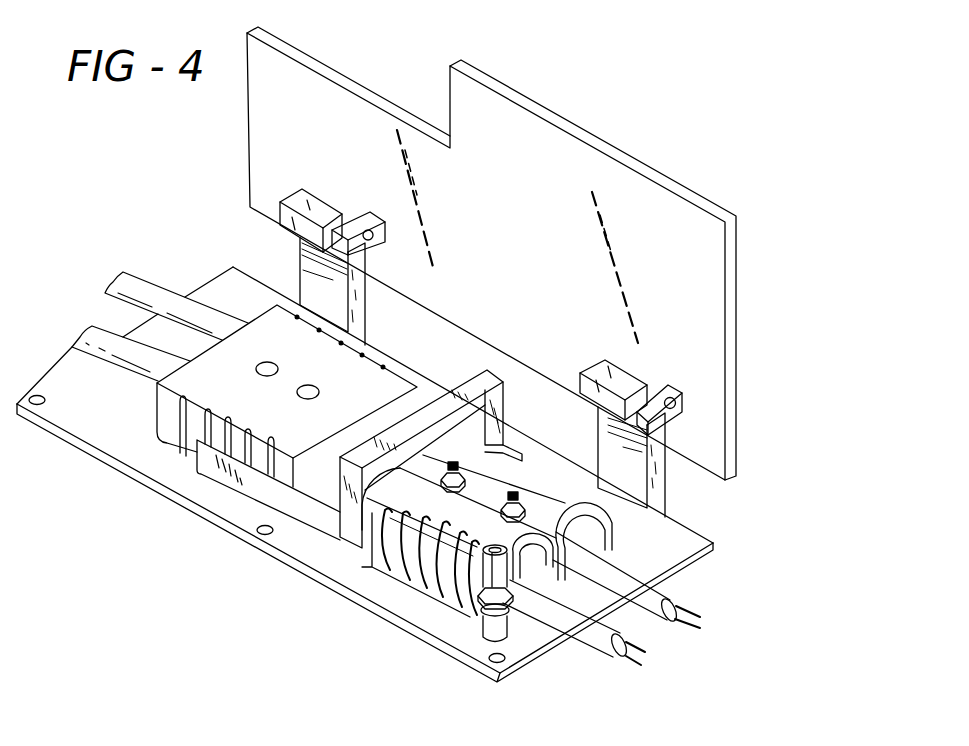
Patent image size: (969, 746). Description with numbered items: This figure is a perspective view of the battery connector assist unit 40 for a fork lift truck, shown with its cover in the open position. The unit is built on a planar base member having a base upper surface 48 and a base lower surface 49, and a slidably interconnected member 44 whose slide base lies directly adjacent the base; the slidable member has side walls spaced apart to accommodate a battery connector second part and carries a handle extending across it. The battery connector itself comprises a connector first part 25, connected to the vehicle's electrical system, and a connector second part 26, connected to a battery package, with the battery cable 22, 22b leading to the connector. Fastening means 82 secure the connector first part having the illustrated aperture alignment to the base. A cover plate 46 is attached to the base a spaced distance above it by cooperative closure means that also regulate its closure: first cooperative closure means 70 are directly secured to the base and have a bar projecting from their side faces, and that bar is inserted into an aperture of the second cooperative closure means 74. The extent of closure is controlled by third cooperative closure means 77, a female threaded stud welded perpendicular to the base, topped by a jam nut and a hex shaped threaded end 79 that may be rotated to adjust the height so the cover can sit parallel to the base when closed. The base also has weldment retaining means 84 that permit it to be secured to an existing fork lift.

The battery cable 22 is at (122, 272).
The battery cable 22b is at (653, 646).
The connector first part 25 is at (565, 503).
The connector second part 26 is at (183, 450).
The battery connector assist unit 40 is at (213, 267).
The slidably interconnected member 44 is at (218, 488).
The cover plate 46 is at (741, 385).
The base upper surface 48 is at (470, 640).
The base lower surface 49 is at (412, 597).
The first cooperative closure means 70 is at (325, 202).
The second cooperative closure means 74 is at (368, 212).
The third cooperative closure means 77 is at (485, 670).
The hex shaped threaded end 79 is at (482, 568).
The fastening means 82 is at (455, 473).
The weldment retaining means 84 is at (37, 405).